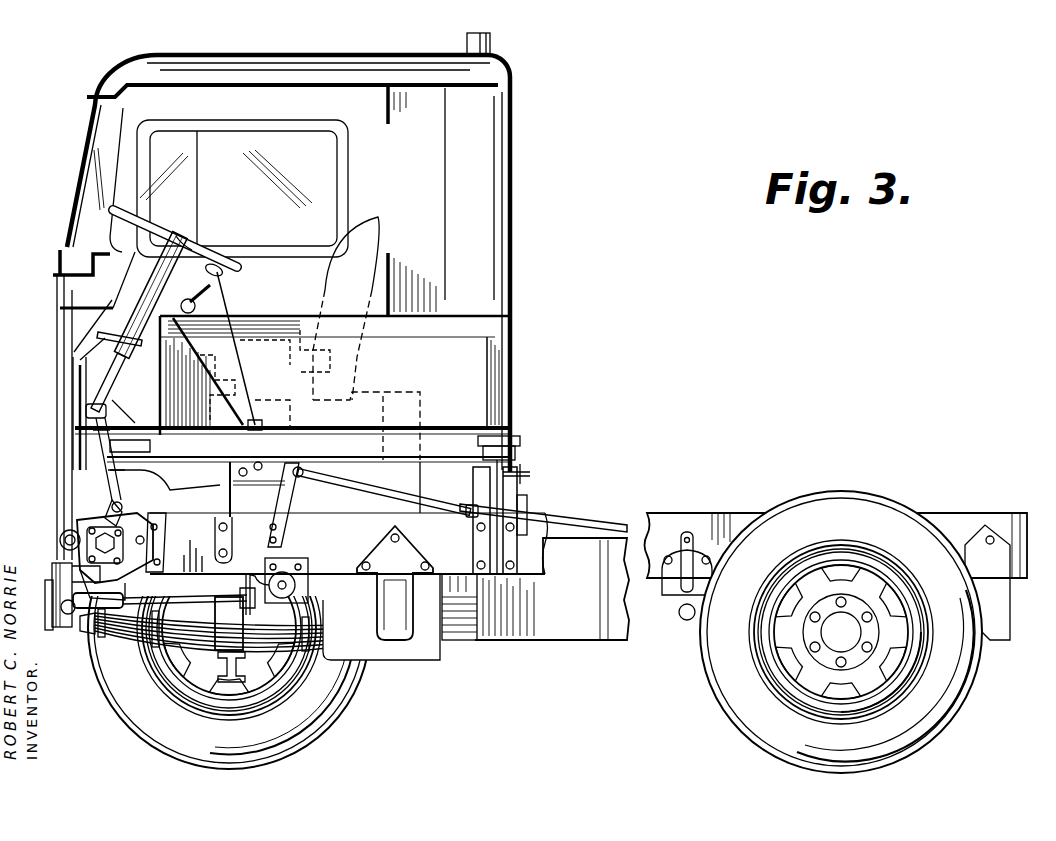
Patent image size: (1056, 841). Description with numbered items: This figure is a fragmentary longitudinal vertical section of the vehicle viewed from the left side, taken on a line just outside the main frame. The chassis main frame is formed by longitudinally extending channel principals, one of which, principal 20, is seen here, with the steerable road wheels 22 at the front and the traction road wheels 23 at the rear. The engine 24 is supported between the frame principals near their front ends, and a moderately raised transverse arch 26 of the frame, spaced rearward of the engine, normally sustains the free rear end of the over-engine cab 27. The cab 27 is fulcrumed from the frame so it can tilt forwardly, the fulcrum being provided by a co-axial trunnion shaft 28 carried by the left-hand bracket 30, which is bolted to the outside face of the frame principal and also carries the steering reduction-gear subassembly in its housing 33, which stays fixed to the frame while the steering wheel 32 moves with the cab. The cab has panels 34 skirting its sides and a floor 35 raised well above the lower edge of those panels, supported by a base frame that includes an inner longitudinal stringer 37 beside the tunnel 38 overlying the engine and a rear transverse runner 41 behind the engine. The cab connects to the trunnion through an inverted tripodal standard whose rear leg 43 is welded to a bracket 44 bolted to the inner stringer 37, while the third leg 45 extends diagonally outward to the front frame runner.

The channel principal 20 is at (350, 522).
The steerable road wheels 22 is at (320, 714).
The traction road wheels 23 is at (748, 708).
The engine 24 is at (385, 398).
The arch 26 is at (518, 490).
The cab 27 is at (100, 80).
The trunnion shaft 28 is at (62, 540).
The bracket 30 is at (64, 521).
The steering wheel 32 is at (241, 266).
The housing 33 is at (143, 516).
The panels 34 is at (70, 410).
The floor 35 is at (440, 428).
The inner longitudinal stringer 37 is at (396, 448).
The tunnel 38 is at (311, 318).
The rear transverse runner 41 is at (472, 440).
The rear leg 43 is at (141, 487).
The bracket 44 is at (166, 472).
The third leg 45 is at (78, 486).